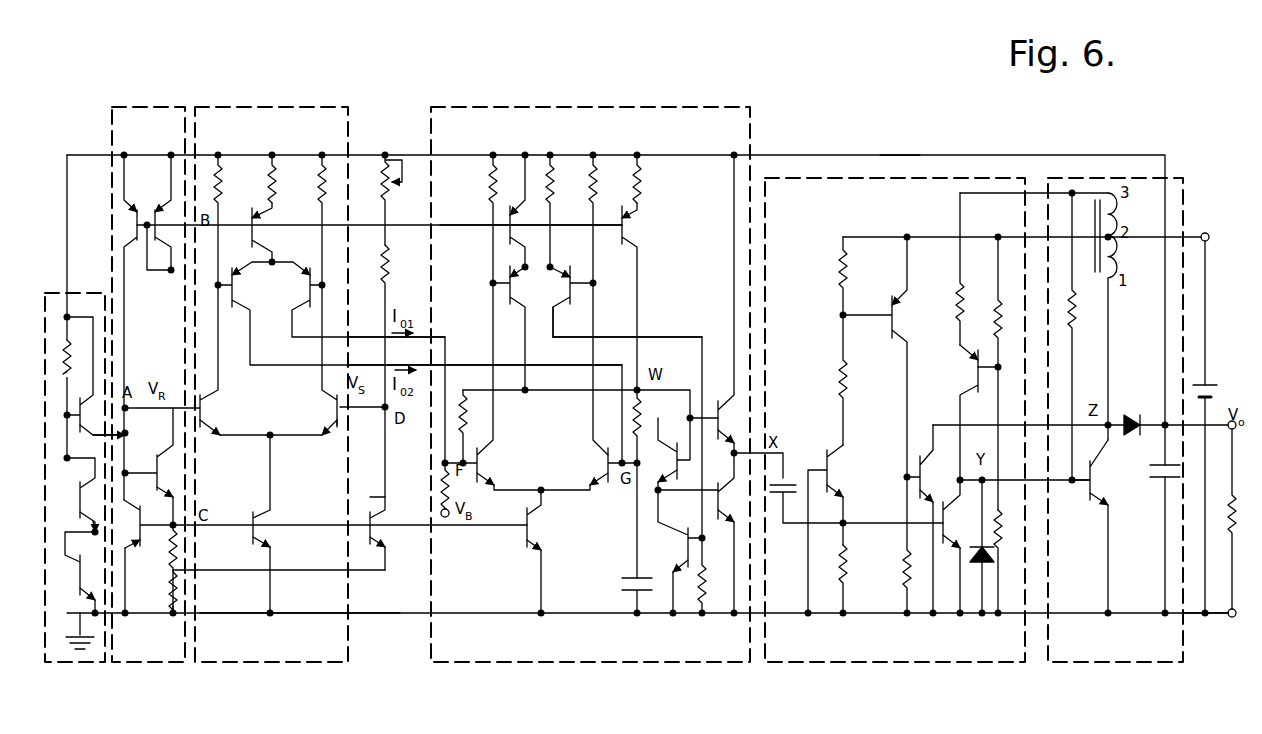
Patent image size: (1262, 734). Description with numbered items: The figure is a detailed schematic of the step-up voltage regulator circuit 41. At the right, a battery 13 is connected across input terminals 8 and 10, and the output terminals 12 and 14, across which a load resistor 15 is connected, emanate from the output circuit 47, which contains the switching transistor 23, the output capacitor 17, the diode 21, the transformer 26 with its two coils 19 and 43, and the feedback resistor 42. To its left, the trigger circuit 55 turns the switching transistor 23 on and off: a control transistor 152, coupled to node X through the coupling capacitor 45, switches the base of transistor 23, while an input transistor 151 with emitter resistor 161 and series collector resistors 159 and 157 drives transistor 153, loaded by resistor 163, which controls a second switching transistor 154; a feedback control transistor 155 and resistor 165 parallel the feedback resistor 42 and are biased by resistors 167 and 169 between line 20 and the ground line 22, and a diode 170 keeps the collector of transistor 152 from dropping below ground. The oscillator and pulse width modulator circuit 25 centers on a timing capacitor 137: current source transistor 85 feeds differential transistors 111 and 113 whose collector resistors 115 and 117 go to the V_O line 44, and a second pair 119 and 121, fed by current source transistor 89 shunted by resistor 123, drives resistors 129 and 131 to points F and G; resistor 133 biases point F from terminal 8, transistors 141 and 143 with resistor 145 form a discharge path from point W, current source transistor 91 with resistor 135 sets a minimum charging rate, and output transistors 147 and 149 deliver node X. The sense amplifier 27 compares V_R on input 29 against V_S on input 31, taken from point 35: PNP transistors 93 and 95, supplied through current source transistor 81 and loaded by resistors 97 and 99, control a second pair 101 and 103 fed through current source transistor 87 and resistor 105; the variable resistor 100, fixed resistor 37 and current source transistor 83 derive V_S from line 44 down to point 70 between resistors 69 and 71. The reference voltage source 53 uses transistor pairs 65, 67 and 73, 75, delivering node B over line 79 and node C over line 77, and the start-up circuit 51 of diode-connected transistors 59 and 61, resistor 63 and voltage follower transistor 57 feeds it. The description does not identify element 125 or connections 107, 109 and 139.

The start-up circuit 51 is at (45, 292).
The reference voltage source 53 is at (178, 104).
The sense amplifier 27 is at (354, 106).
The oscillator and pulse width modulator circuit 25 is at (652, 106).
The circuit 41 is at (634, 66).
The trigger circuit 55 is at (797, 176).
The V_O line 44 is at (892, 154).
The output circuit 47 is at (1182, 178).
The resistor 63 is at (69, 362).
The third transistor 57 is at (98, 404).
The transistor 59 is at (80, 505).
The transistor 61 is at (80, 586).
The transistor 73 is at (156, 210).
The transistor 75 is at (136, 212).
The input 29 is at (195, 415).
The transistor 67 is at (157, 461).
The transistor 65 is at (150, 509).
The resistor 69 is at (174, 562).
The point 70 is at (170, 578).
The resistor 71 is at (170, 606).
The load resistor 97 is at (228, 161).
The PNP transistor 93 is at (212, 410).
The PNP transistor 101 is at (238, 296).
The constant current source transistor 87 is at (251, 221).
The current source resistor 105 is at (274, 194).
The PNP transistor 103 is at (312, 254).
The load resistor 99 is at (320, 186).
The PNP transistor 95 is at (328, 410).
The point 35 is at (380, 408).
The input 31 is at (337, 423).
The line 77 is at (220, 534).
The constant current source transistor 81 is at (252, 539).
The constant current source transistor 83 is at (365, 508).
The variable resistor 100 is at (382, 165).
The fixed resistor 37 is at (389, 258).
The ground line 22 is at (413, 617).
The resistor 115 is at (478, 165).
The constant current source transistor 89 is at (510, 236).
The transistor 119 is at (510, 296).
The resistor 123 is at (552, 163).
The transistor 125 is at (551, 267).
The transistor 121 is at (582, 300).
The resistor 117 is at (591, 165).
The resistor 135 is at (640, 185).
The constant current source transistor 91 is at (612, 212).
The line 79 is at (442, 225).
The line 139 is at (682, 337).
The current line 107 is at (442, 337).
The current line 109 is at (447, 365).
The resistor 129 is at (460, 396).
The transistor 111 is at (488, 457).
The transistor 113 is at (602, 461).
The resistor 133 is at (442, 483).
The resistor 131 is at (640, 410).
The timing capacitor 137 is at (632, 580).
The current source transistor 85 is at (527, 540).
The transistor 141 is at (670, 484).
The transistor 143 is at (682, 546).
The output transistor 147 is at (716, 396).
The output transistor 149 is at (716, 552).
The resistor 145 is at (704, 608).
The coupling capacitor 45 is at (778, 498).
The line 20 is at (854, 237).
The resistor 157 is at (848, 268).
The resistor 159 is at (842, 368).
The transistor 153 is at (892, 342).
The input transistor 151 is at (826, 452).
The resistor 161 is at (850, 560).
The transistor 154 is at (916, 480).
The resistor 163 is at (906, 578).
The resistor 165 is at (955, 292).
The feedback control transistor 155 is at (970, 392).
The bias resistor 167 is at (994, 298).
The control transistor 152 is at (944, 530).
The bias resistor 169 is at (1000, 506).
The diode 170 is at (980, 576).
The transformer 26 is at (1088, 227).
The coil 43 is at (1118, 212).
The coil 19 is at (1118, 262).
The feedback resistor 42 is at (1074, 322).
The switching transistor 23 is at (1090, 500).
The diode 21 is at (1144, 412).
The output capacitor 17 is at (1160, 478).
The input terminal 8 is at (1208, 234).
The battery 13 is at (1206, 385).
The output terminal 12 is at (1230, 430).
The load resistor 15 is at (1230, 532).
The output terminal 14 is at (1232, 618).
The input terminal 10 is at (1205, 629).